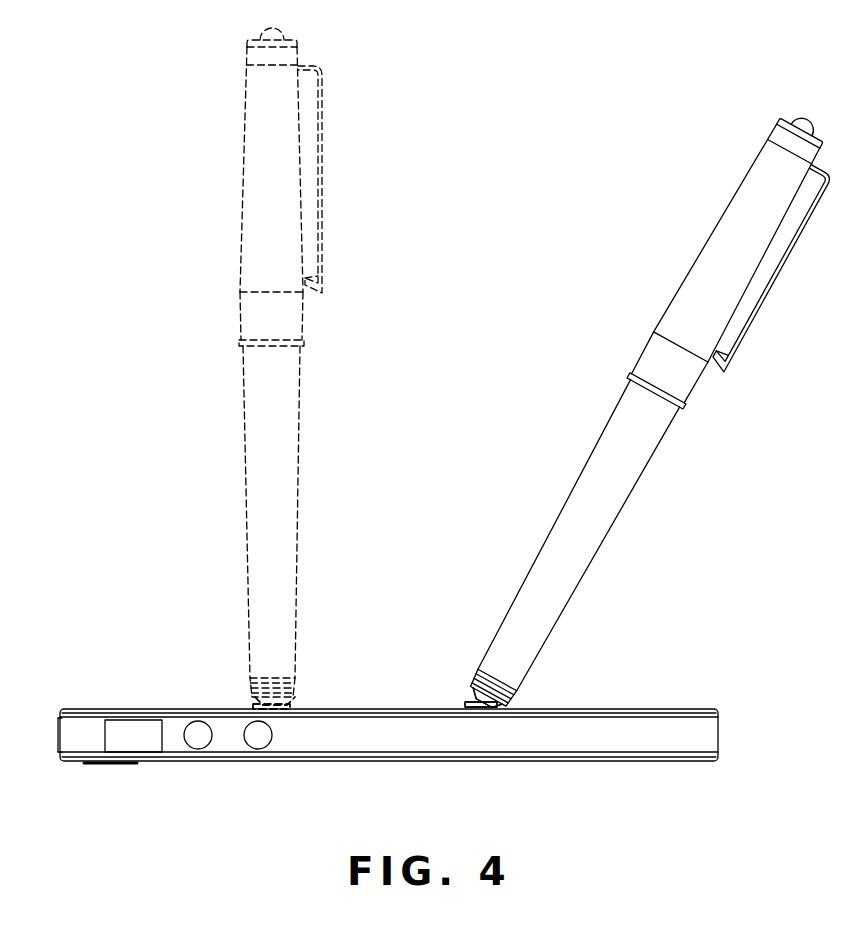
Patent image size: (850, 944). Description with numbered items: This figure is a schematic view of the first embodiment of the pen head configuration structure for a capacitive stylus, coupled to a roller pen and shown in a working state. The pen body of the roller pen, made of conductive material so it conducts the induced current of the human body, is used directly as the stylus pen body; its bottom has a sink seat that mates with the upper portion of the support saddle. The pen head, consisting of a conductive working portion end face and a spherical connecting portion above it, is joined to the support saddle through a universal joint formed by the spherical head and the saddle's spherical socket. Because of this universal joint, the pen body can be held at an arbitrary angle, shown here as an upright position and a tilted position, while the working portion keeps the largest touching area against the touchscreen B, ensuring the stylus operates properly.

The touchscreen B is at (83, 708).